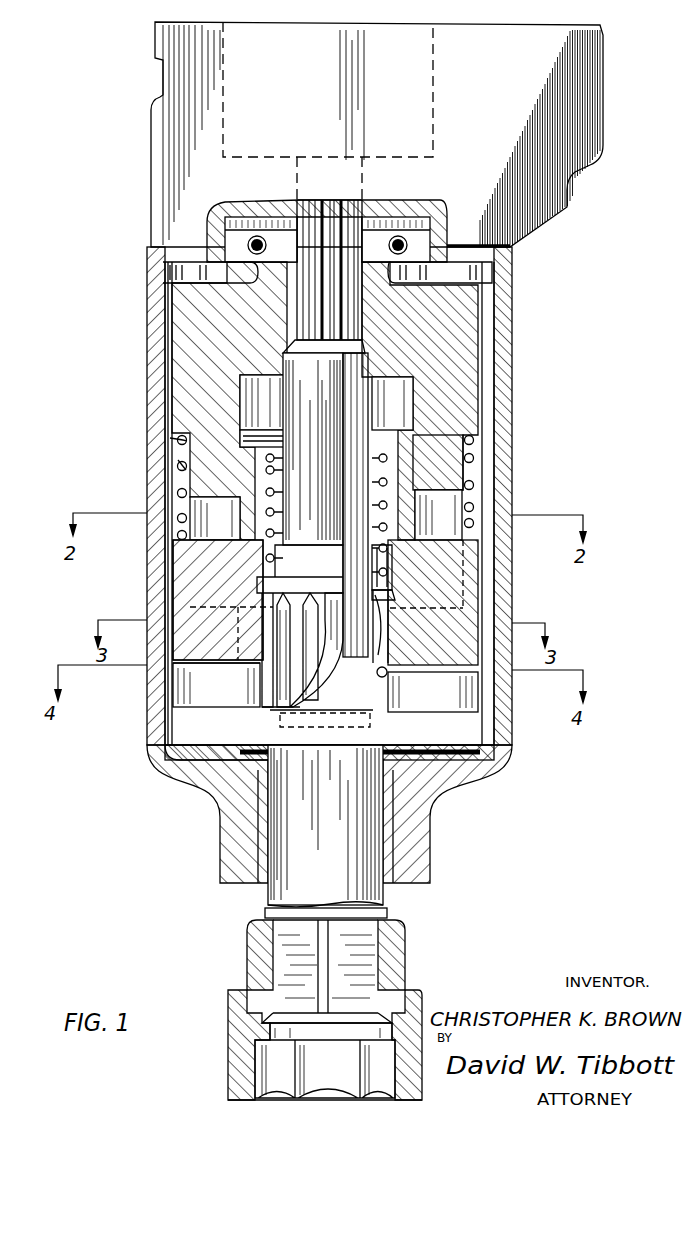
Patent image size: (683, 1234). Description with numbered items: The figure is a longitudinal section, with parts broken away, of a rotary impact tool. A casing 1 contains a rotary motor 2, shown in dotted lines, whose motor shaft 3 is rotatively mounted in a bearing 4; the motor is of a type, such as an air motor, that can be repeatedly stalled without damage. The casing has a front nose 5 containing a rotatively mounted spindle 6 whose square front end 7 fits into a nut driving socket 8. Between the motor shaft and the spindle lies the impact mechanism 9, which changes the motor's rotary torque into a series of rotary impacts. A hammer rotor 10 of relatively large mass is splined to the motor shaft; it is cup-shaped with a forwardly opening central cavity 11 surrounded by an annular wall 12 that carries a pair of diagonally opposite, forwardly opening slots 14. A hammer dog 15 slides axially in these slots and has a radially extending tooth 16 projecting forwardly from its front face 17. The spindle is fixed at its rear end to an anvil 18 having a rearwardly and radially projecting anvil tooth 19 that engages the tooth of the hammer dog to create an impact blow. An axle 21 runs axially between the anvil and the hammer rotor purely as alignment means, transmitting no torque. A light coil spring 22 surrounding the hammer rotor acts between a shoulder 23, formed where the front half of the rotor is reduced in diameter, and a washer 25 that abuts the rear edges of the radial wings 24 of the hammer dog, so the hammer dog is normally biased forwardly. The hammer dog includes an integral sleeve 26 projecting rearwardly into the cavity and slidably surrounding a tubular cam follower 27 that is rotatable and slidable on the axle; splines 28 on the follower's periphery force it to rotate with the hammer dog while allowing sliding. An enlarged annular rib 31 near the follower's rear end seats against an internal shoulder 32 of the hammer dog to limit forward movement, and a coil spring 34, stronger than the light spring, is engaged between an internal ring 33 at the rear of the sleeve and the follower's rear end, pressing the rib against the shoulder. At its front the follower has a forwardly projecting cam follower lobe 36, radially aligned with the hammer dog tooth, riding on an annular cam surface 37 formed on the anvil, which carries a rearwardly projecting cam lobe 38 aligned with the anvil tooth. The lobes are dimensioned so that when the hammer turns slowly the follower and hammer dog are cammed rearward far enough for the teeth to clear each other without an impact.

The casing 1 is at (562, 236).
The rotary motor 2 is at (430, 97).
The motor shaft 3 is at (333, 215).
The bearing 4 is at (252, 238).
The front nose 5 is at (418, 825).
The spindle 6 is at (298, 877).
The square front end 7 is at (365, 965).
The socket 8 is at (252, 1003).
The impact mechanism 9 is at (500, 419).
The hammer rotor 10 is at (470, 350).
The central cavity 11 is at (378, 408).
The annular wall 12 is at (455, 478).
The slots 14 is at (472, 503).
The hammer dog 15 is at (470, 572).
The hammer dog tooth 16 is at (228, 690).
The front face 17 is at (205, 680).
The anvil 18 is at (185, 758).
The anvil tooth 19 is at (475, 690).
The axle 21 is at (356, 395).
The light coil spring 22 is at (178, 467).
The shoulder 23 is at (178, 440).
The radial wings 24 is at (172, 575).
The washer 25 is at (185, 535).
The sleeve 26 is at (403, 470).
The tubular cam follower 27 is at (378, 613).
The splines 28 is at (325, 652).
The annular rib 31 is at (393, 575).
The internal shoulder 32 is at (393, 592).
The internal ring 33 is at (385, 435).
The coil spring 34 is at (276, 492).
The cam follower lobe 36 is at (287, 712).
The annular cam surface 37 is at (372, 712).
The cam lobe 38 is at (385, 676).